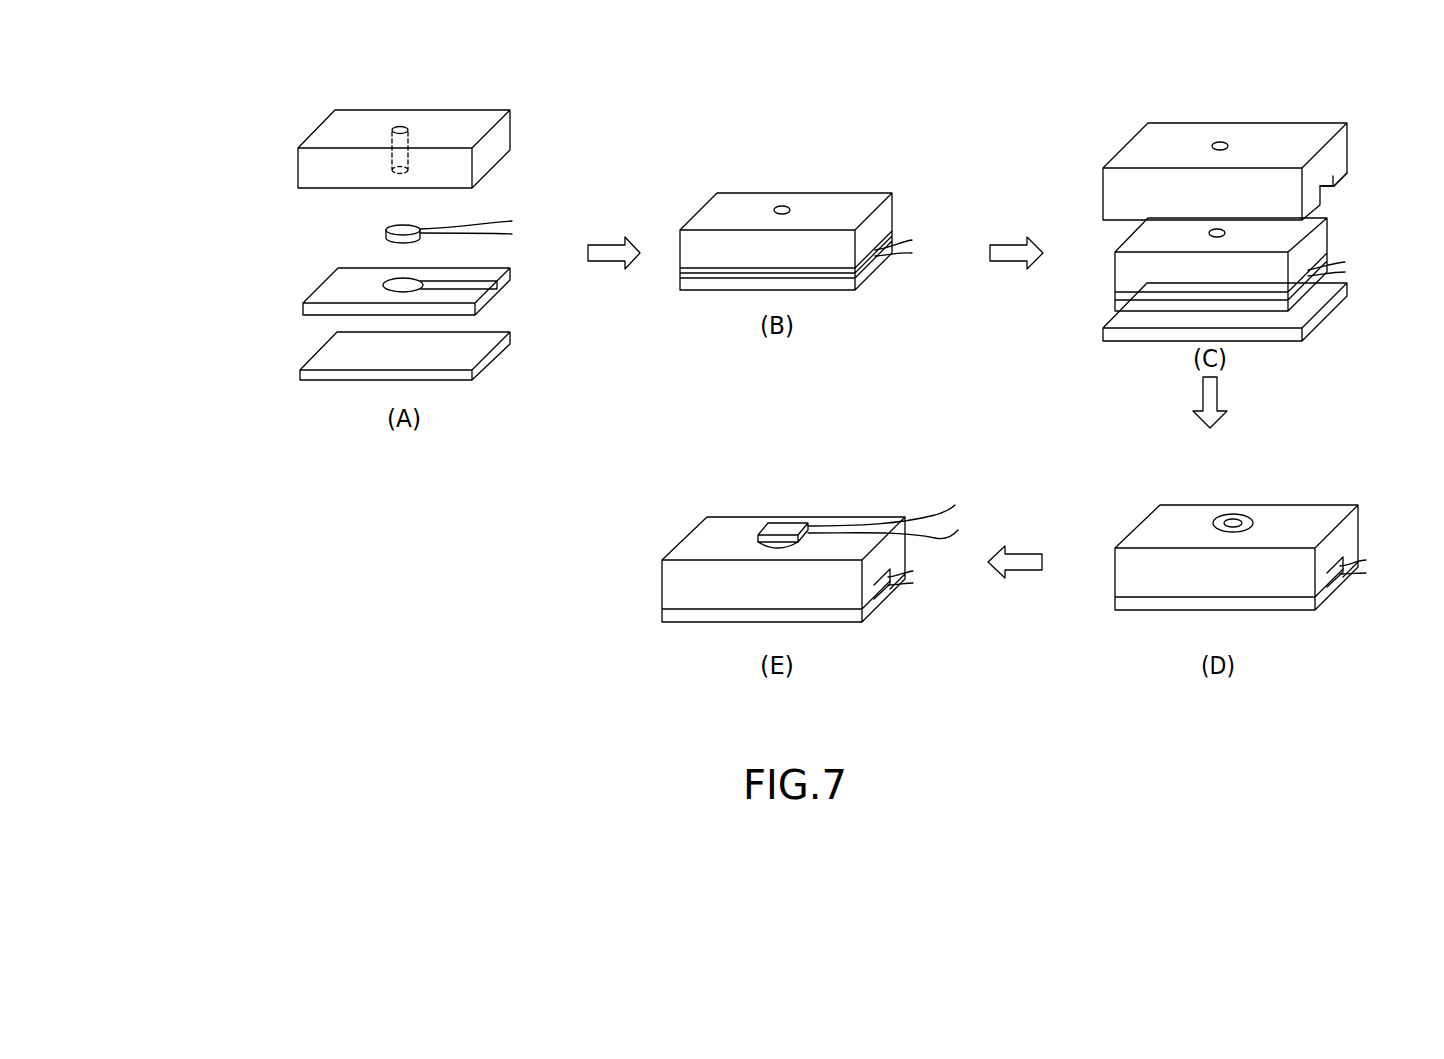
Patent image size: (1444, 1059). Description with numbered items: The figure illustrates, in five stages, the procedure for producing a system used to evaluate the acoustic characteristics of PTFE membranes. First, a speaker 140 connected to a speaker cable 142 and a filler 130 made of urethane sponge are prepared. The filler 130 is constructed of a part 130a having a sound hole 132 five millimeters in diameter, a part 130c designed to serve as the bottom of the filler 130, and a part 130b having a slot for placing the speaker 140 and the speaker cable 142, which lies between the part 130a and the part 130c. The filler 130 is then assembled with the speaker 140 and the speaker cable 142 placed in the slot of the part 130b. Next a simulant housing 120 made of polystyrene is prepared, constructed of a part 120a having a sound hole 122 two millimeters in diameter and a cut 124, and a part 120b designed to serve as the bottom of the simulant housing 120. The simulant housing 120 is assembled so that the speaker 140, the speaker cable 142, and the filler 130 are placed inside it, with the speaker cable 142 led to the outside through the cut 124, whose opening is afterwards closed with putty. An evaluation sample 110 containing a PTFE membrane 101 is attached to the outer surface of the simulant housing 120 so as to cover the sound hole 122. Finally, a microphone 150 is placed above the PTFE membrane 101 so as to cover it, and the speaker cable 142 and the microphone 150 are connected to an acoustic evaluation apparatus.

The PTFE membrane 101 is at (773, 544).
The evaluation sample 110 is at (1218, 520).
The simulant housing 120 is at (1011, 290).
The part having sound hole and cut 120a is at (1112, 193).
The part serving as bottom of simulant housing 120b is at (1110, 333).
The sound hole 122 is at (1221, 142).
The cut 124 is at (1337, 190).
The filler 130 is at (180, 148).
The part having sound hole 130a is at (302, 170).
The part having slot 130b is at (303, 307).
The part serving as bottom of filler 130c is at (300, 372).
The sound hole 132 is at (399, 126).
The speaker 140 is at (403, 228).
The speaker cable 142 is at (514, 217).
The microphone 150 is at (783, 528).